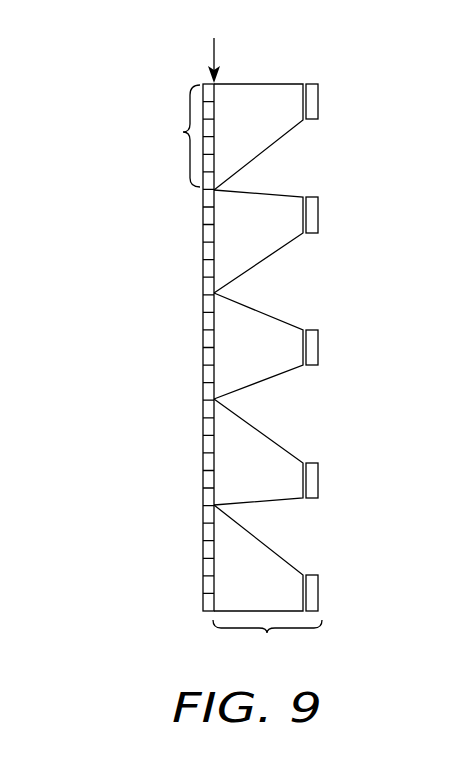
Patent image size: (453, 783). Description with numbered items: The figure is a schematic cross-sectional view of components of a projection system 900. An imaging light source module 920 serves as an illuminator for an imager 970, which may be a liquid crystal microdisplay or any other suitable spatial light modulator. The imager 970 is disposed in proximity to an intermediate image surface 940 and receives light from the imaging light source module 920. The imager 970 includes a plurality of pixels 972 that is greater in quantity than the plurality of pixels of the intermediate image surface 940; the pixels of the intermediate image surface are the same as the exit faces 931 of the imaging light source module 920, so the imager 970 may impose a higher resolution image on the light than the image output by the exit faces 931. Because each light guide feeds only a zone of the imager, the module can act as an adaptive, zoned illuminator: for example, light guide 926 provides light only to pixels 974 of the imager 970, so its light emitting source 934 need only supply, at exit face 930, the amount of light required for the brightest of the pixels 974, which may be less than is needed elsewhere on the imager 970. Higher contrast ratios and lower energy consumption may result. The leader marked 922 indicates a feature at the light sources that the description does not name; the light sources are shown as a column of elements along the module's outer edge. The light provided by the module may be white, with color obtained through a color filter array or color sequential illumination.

The projection system 900 is at (121, 93).
The intermediate image surface 940 is at (214, 50).
The exit face 930 is at (215, 108).
The light guide 926 is at (283, 92).
The light emitting source 934 is at (314, 102).
The pixels 974 is at (169, 136).
The pixels 972 is at (205, 347).
The exit faces 931 is at (214, 235).
The tab spacing 922 is at (318, 348).
The imager 970 is at (206, 612).
The imaging light source module 920 is at (267, 644).